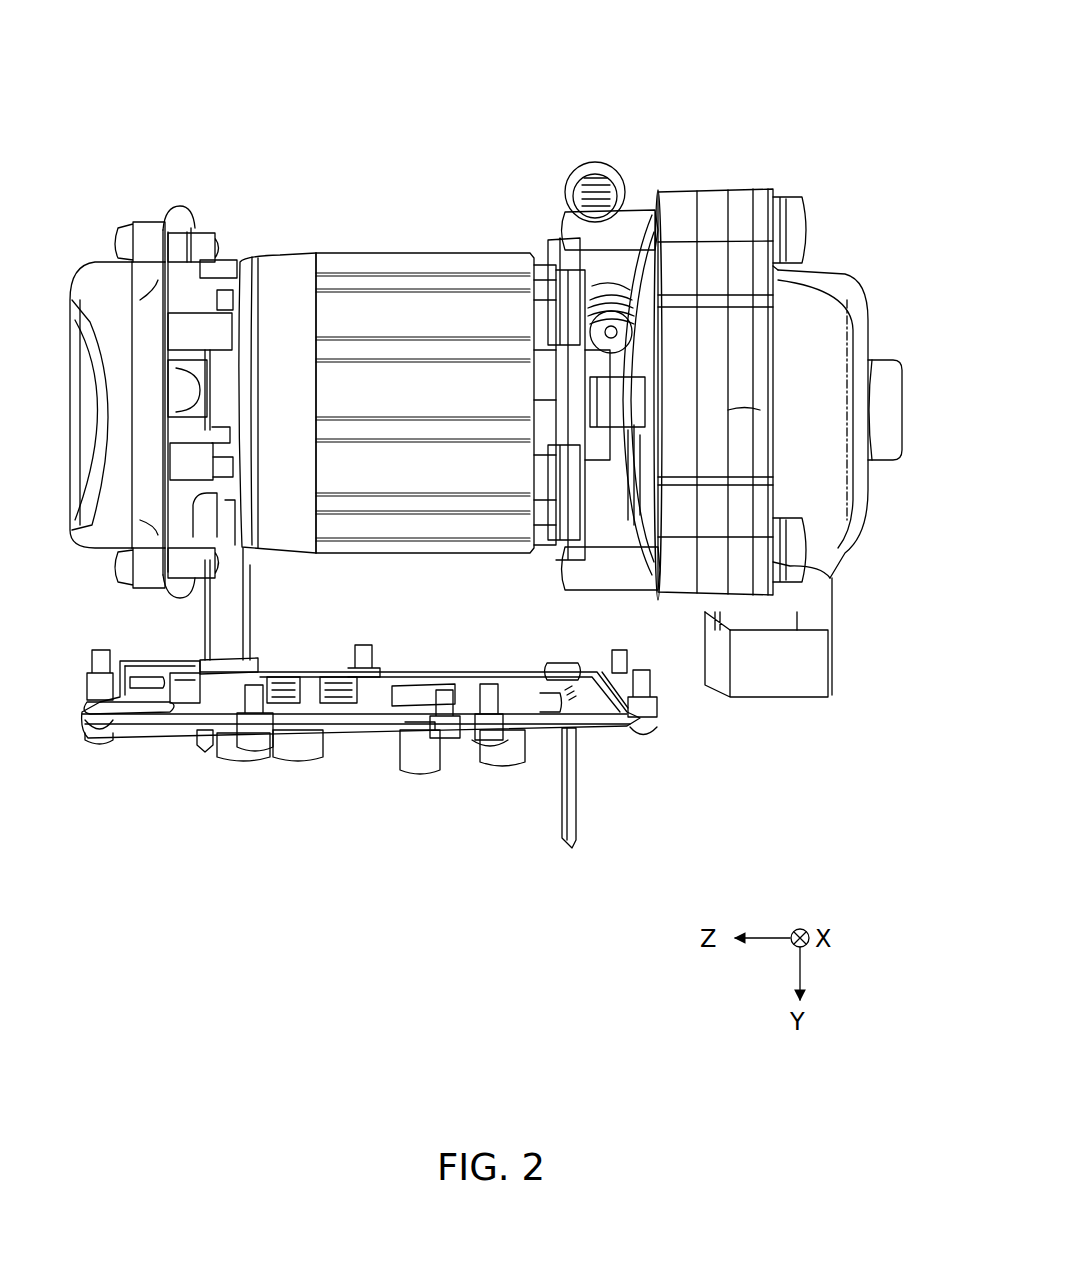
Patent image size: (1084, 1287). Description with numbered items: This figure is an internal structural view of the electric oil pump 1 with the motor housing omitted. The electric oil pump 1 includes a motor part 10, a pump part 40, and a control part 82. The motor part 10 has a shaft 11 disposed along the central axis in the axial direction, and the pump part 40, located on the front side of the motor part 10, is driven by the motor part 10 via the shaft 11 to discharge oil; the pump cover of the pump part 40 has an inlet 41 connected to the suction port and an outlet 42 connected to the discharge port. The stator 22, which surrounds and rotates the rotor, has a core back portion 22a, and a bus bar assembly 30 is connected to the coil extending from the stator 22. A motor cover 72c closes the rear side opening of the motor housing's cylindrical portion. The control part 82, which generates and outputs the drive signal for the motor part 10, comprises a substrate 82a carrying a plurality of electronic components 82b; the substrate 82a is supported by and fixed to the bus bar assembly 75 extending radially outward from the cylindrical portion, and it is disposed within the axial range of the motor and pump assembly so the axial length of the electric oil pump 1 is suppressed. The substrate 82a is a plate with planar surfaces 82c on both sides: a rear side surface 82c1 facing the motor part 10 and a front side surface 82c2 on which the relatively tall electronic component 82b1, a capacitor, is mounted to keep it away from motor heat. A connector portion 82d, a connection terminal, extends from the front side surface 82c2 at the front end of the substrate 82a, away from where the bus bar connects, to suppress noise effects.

The electric oil pump 1 is at (650, 112).
The motor part 10 is at (428, 185).
The stator 22 is at (482, 248).
The core back portion 22a is at (358, 265).
The bus bar assembly 30 is at (278, 250).
The motor cover 72c is at (103, 275).
The bus bar assembly 75 is at (195, 627).
The shaft 11 is at (612, 405).
The pump part 40 is at (795, 178).
The outlet 42 is at (902, 432).
The inlet 41 is at (775, 700).
The control part 82 is at (342, 785).
The substrate 82a is at (305, 705).
The electronic components 82b is at (414, 672).
The electronic component having a relatively high height 82b1 is at (440, 772).
The surface 82c is at (522, 685).
The rear side surface 82c1 is at (361, 699).
The front side surface 82c2 is at (352, 718).
The connector portion 82d is at (580, 780).